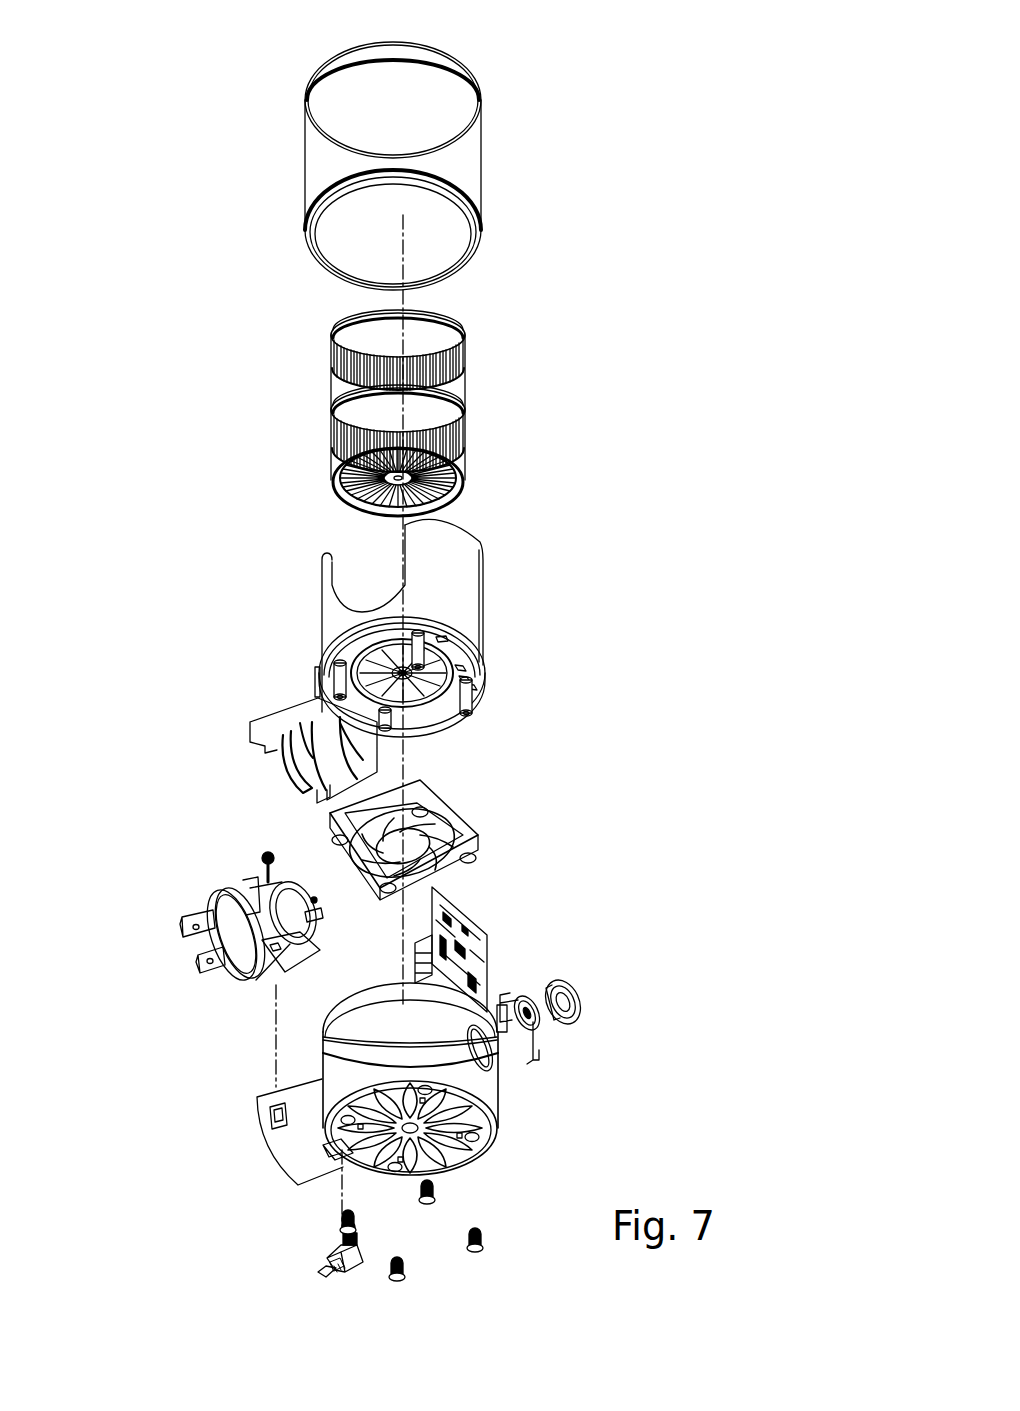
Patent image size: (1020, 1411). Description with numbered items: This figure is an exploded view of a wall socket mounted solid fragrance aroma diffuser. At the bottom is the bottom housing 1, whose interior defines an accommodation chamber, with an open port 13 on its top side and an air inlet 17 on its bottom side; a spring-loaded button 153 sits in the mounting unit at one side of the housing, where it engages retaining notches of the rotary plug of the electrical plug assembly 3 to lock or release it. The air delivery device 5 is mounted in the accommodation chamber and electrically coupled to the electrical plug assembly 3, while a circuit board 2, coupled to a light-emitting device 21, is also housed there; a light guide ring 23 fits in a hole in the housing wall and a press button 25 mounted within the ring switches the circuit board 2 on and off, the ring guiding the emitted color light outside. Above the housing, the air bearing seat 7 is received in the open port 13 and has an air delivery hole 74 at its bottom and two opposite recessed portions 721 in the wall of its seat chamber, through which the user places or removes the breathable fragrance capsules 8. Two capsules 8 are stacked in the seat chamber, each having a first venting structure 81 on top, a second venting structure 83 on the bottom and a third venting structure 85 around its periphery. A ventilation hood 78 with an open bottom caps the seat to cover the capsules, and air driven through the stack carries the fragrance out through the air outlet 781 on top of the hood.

The bottom housing 1 is at (493, 1118).
The open port 13 is at (325, 1020).
The air inlet 17 is at (385, 1155).
The spring-loaded button 153 is at (320, 1270).
The circuit board 2 is at (480, 932).
The light-emitting device 21 is at (498, 968).
The light guide ring 23 is at (578, 985).
The press button 25 is at (542, 1036).
The electrical plug assembly 3 is at (230, 890).
The air delivery device 5 is at (473, 837).
The air bearing seat 7 is at (470, 600).
The recessed portion 721 is at (323, 617).
The air delivery hole 74 is at (430, 700).
The breathable fragrance capsule 8 is at (330, 420).
The first venting structure 81 is at (463, 300).
The second venting structure 83 is at (343, 508).
The third venting structure 85 is at (330, 388).
The ventilation hood 78 is at (470, 158).
The air outlet 781 is at (402, 38).